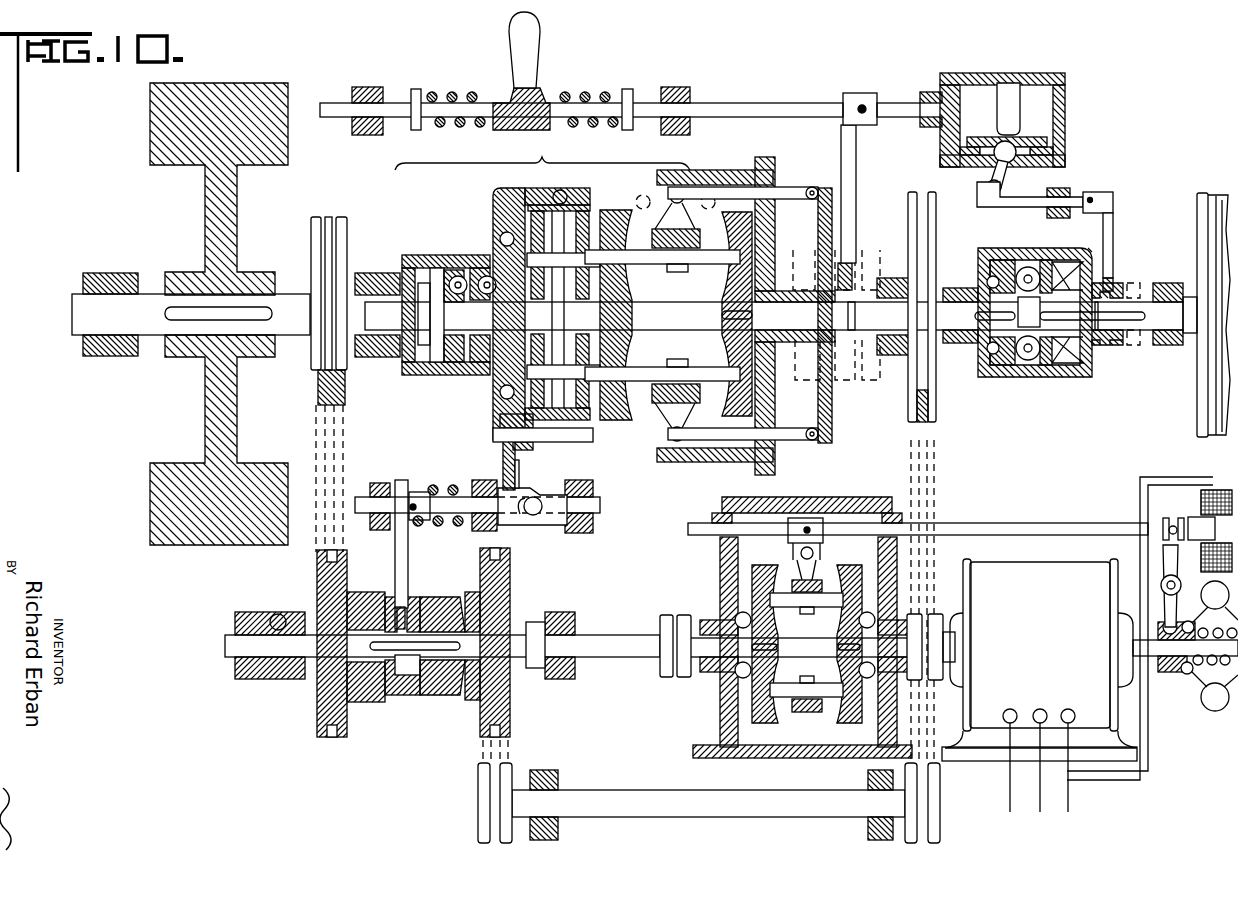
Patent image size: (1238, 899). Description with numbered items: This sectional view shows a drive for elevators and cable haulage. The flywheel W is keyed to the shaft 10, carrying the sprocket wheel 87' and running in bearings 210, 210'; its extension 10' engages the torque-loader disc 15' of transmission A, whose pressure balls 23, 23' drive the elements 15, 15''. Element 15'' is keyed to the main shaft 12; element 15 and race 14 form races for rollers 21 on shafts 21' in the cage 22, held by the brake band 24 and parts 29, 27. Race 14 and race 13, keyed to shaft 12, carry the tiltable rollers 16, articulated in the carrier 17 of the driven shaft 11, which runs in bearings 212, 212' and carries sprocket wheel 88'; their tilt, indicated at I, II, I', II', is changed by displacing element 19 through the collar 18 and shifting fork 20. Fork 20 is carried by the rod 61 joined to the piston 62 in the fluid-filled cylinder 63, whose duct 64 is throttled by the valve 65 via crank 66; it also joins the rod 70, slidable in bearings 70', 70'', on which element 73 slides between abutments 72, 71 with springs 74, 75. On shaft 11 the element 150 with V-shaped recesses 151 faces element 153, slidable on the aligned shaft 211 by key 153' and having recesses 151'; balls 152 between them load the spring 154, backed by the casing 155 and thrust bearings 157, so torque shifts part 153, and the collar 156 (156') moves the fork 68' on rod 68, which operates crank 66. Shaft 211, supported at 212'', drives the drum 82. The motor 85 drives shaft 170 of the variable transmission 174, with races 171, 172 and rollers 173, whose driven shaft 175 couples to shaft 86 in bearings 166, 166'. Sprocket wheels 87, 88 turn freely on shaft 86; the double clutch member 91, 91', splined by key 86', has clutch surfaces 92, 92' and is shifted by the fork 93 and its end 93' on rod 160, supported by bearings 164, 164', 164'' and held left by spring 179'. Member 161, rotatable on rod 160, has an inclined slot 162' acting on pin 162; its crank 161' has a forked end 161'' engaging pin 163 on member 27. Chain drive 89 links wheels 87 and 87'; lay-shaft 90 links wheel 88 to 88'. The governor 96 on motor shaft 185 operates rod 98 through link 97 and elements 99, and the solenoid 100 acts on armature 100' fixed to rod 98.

The flywheel W is at (175, 494).
The shaft 10 is at (191, 292).
The extension of the shaft 10' is at (446, 323).
The driven shaft 11 is at (860, 292).
The main shaft 12 is at (655, 320).
The race 13 is at (748, 236).
The race 14 is at (604, 410).
The element 15 is at (453, 332).
The torque-loader disc 15' is at (461, 342).
The element 15'' is at (410, 327).
The tiltable rollers 16 is at (704, 265).
The carrier 17 is at (714, 176).
The collar 18 is at (851, 270).
The element 19 is at (820, 238).
The shifting fork 20 is at (858, 170).
The rollers 21 is at (534, 336).
The shafts 21' is at (500, 427).
The cage 22 is at (541, 225).
The pressure balls 23 is at (473, 262).
The pressure balls 23' is at (443, 262).
The brake band 24 is at (582, 214).
The member 27 is at (497, 210).
The part 29 is at (566, 192).
The rod 61 is at (894, 100).
The piston 62 is at (1012, 92).
The cylinder 63 is at (976, 78).
The duct 64 is at (1050, 151).
The valve 65 is at (998, 156).
The crank 66 is at (1005, 181).
The rod 68 is at (1030, 203).
The fork 68' is at (1116, 241).
The rod 70 is at (581, 94).
The bearing 70' is at (367, 119).
The bearing 70'' is at (679, 119).
The abutment 71 is at (628, 92).
The abutment 72 is at (418, 92).
The element 73 is at (530, 58).
The spring 74 is at (575, 130).
The spring 75 is at (443, 130).
The drum 82 is at (1218, 200).
The electrical motor 85 is at (1026, 574).
The shaft 86 is at (442, 657).
The key 86' is at (405, 675).
The sprocket wheel 87 is at (316, 643).
The sprocket wheel 87' is at (344, 314).
The sprocket wheel 88 is at (510, 642).
The sprocket wheel 88' is at (946, 476).
The chain drive 89 is at (330, 482).
The lay-shaft 90 is at (502, 756).
The clutch member 91 is at (402, 671).
The clutch member 91' is at (442, 668).
The clutch surface 92 is at (366, 657).
The clutch surface 92' is at (466, 666).
The fork 93 is at (416, 544).
The lever tip 93' is at (413, 604).
The centrifugal governor 96 is at (1203, 683).
The link 97 is at (1174, 568).
The rod 98 is at (1060, 524).
The elements 99 is at (818, 553).
The solenoid 100 is at (1212, 510).
The armature 100' is at (1183, 512).
The element 150 is at (1002, 366).
The V shaped recesses 151 is at (1045, 319).
The recesses 151' is at (1067, 280).
The balls 152 is at (1030, 364).
The element 153 is at (1072, 297).
The key 153' is at (1121, 286).
The spring 154 is at (1062, 362).
The casing 155 is at (992, 256).
The collar 156 is at (1109, 327).
The bearing 156' is at (1159, 287).
The thrust bearings 157 is at (988, 354).
The rod 160 is at (441, 497).
The member 161 is at (554, 517).
The crank 161' is at (528, 465).
The forked end 161'' is at (479, 437).
The pin 162 is at (547, 492).
The inclined slot 162' is at (529, 525).
The pin 163 is at (584, 438).
The bearing 164 is at (381, 515).
The bearing 164' is at (485, 492).
The bearing 164'' is at (601, 505).
The bearing 166 is at (270, 654).
The bearing 166' is at (555, 654).
The drive shaft 170 is at (890, 640).
The race 171 is at (860, 583).
The race 172 is at (756, 572).
The tiltable rollers 173 is at (808, 608).
The variable speed transmission 174 is at (728, 720).
The driven shaft 175 is at (697, 666).
The spring 179' is at (438, 518).
The motor shaft 185 is at (1145, 650).
The bearing 210 is at (110, 328).
The bearing 210' is at (279, 299).
The shaft 211 is at (1152, 330).
The bearing 212 is at (893, 322).
The bearing 212' is at (957, 327).
The bearing 212'' is at (1173, 337).
The assembly A is at (542, 154).
The position I is at (845, 325).
The position II is at (806, 326).
The position I' is at (643, 210).
The position II' is at (790, 287).